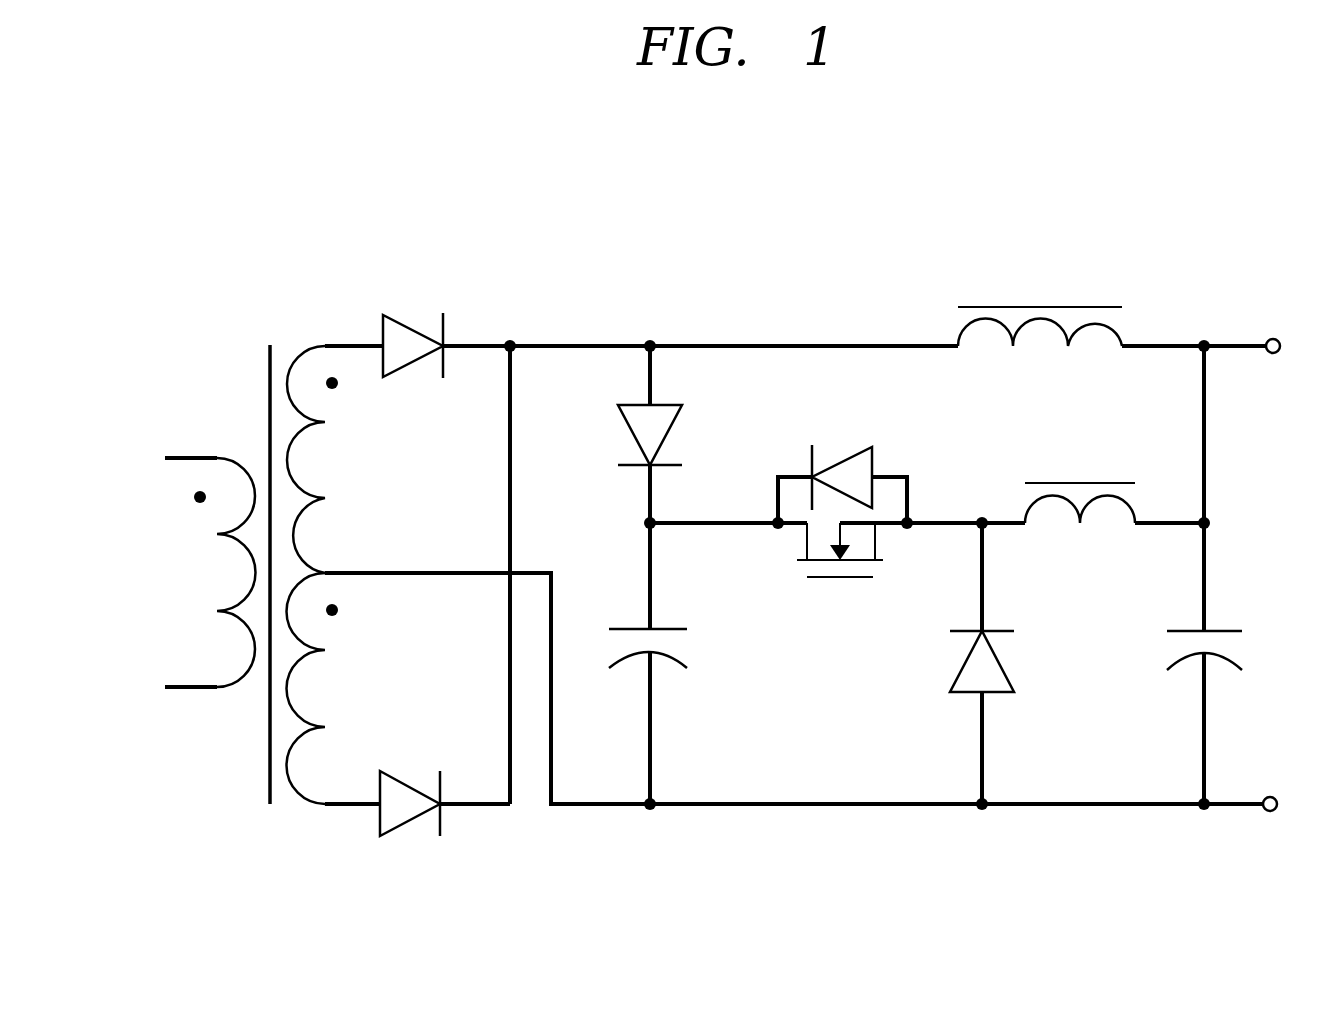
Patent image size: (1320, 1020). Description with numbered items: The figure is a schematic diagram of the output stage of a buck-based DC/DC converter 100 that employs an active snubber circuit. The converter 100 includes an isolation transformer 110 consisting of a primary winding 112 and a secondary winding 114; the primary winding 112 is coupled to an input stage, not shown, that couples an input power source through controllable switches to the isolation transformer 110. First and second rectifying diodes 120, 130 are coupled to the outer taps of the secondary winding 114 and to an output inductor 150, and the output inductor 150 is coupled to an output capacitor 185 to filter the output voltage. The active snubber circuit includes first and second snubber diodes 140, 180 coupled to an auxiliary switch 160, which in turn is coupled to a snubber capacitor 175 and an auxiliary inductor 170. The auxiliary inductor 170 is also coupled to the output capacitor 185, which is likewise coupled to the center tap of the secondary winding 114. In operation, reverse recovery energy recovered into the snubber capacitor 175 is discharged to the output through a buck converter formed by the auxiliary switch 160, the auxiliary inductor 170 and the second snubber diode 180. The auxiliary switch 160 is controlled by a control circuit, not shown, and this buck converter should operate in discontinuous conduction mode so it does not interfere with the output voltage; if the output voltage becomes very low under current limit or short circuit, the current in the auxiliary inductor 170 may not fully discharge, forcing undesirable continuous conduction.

The buck-based DC/DC converter 100 is at (1201, 124).
The isolation transformer 110 is at (268, 770).
The primary winding 112 is at (195, 457).
The secondary winding 114 is at (308, 344).
The first rectifying diode 120 is at (416, 330).
The second rectifying diode 130 is at (413, 818).
The first snubber diode 140 is at (667, 432).
The output inductor 150 is at (1045, 307).
The auxiliary switch 160 is at (887, 476).
The auxiliary inductor 170 is at (1080, 483).
The snubber capacitor 175 is at (670, 628).
The second snubber diode 180 is at (957, 662).
The output capacitor 185 is at (1225, 631).